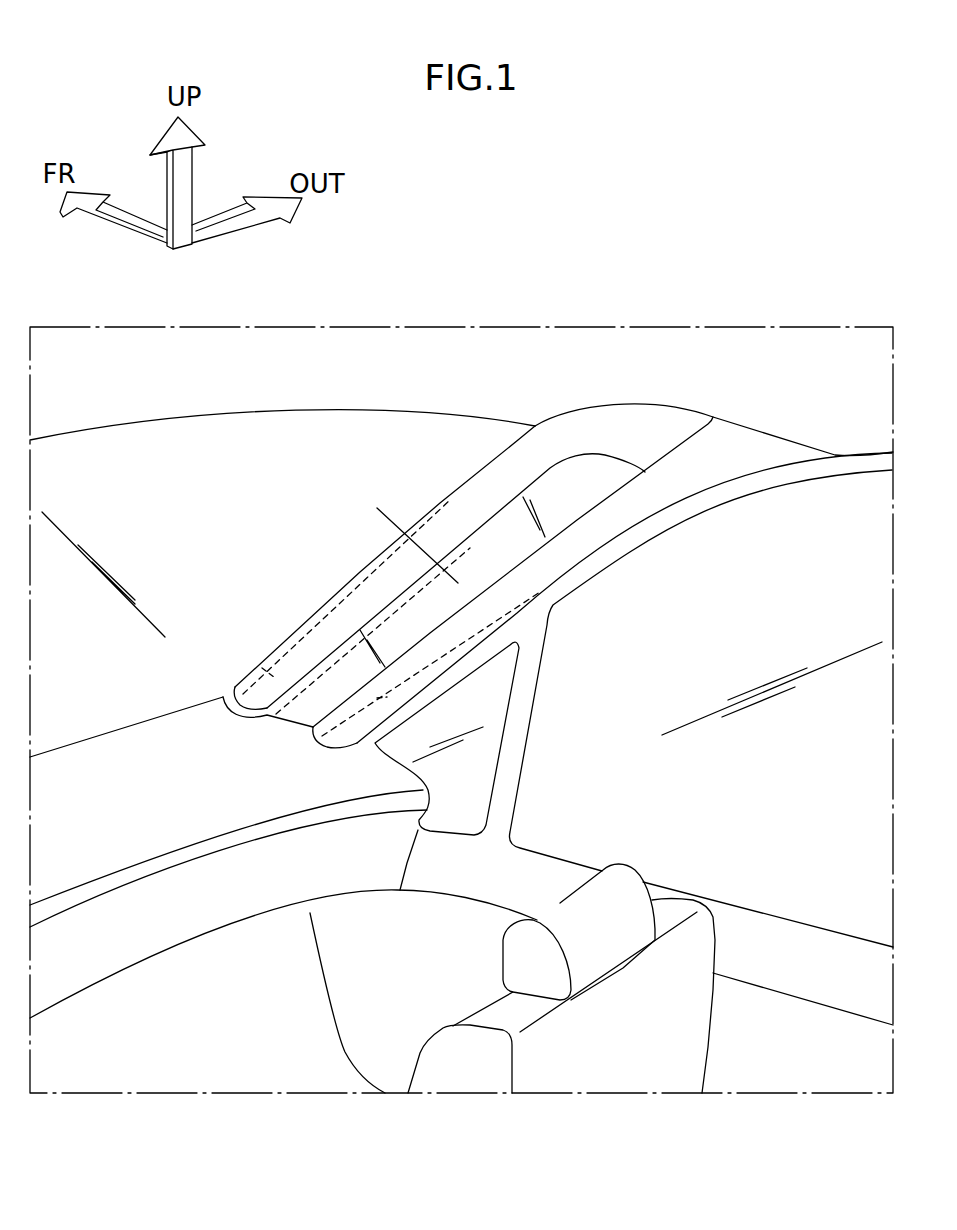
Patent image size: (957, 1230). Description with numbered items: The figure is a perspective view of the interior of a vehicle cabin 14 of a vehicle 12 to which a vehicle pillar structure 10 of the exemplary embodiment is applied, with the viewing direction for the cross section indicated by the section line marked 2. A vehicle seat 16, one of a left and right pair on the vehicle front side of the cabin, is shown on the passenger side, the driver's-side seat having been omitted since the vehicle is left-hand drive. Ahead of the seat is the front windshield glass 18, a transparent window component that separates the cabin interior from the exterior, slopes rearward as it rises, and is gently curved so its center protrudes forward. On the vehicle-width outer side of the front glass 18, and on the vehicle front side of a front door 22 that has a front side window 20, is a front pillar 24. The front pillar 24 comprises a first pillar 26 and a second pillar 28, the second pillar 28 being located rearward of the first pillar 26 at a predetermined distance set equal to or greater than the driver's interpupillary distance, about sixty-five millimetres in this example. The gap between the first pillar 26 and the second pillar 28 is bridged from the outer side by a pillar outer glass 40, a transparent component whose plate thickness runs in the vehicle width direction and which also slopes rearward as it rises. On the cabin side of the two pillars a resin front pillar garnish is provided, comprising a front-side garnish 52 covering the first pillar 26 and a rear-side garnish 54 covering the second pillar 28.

The vehicle 12 is at (745, 347).
The vehicle pillar structure 10 is at (495, 597).
The front pillar 24 is at (333, 562).
The front-side garnish 52 is at (268, 631).
The rear-side garnish 54 is at (463, 674).
The first pillar 26 is at (262, 668).
The second pillar 28 is at (377, 698).
The pillar outer glass 40 is at (570, 502).
The vehicle cabin 14 is at (220, 779).
The front windshield glass 18 is at (62, 717).
The vehicle seat 16 is at (677, 910).
The front side window 20 is at (572, 822).
The front door 22 is at (769, 1006).
The section line 2 is at (383, 499).